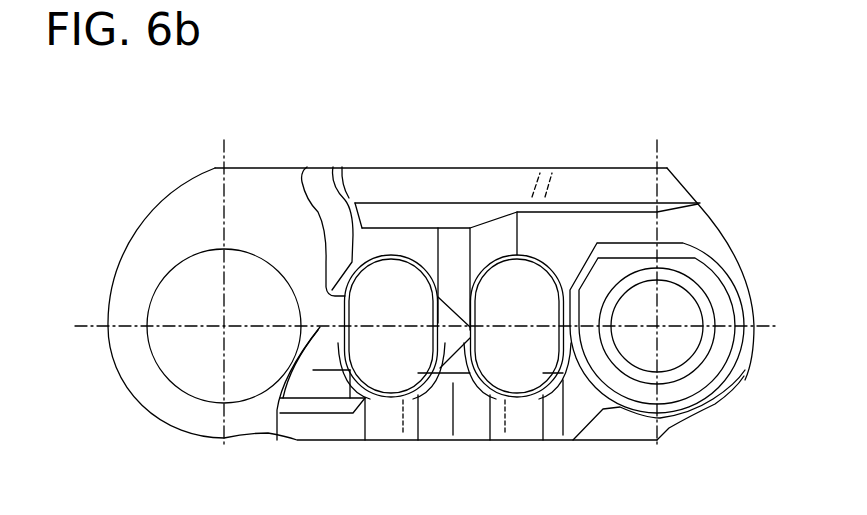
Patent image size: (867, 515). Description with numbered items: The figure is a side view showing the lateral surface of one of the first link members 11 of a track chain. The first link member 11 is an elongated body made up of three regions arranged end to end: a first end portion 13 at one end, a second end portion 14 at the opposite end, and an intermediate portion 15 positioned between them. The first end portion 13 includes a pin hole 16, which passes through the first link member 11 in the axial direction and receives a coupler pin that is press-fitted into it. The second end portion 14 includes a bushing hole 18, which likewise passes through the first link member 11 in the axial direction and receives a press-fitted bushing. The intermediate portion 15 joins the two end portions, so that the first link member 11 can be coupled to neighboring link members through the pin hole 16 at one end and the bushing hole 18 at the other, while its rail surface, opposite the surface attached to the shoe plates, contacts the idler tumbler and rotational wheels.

The first link member 11 is at (548, 113).
The first end portion 13 is at (710, 167).
The second end portion 14 is at (195, 153).
The intermediate portion 15 is at (425, 150).
The pin hole 16 is at (685, 366).
The bushing hole 18 is at (168, 292).